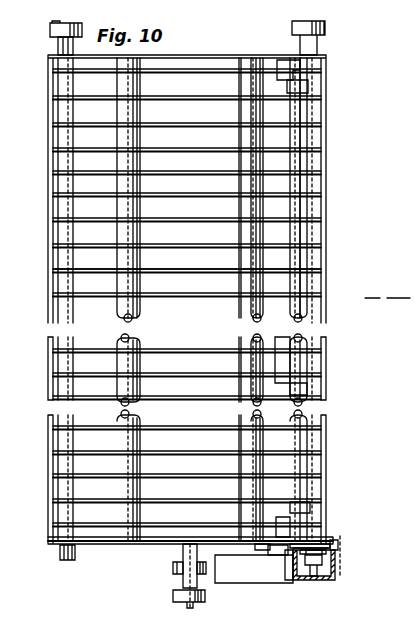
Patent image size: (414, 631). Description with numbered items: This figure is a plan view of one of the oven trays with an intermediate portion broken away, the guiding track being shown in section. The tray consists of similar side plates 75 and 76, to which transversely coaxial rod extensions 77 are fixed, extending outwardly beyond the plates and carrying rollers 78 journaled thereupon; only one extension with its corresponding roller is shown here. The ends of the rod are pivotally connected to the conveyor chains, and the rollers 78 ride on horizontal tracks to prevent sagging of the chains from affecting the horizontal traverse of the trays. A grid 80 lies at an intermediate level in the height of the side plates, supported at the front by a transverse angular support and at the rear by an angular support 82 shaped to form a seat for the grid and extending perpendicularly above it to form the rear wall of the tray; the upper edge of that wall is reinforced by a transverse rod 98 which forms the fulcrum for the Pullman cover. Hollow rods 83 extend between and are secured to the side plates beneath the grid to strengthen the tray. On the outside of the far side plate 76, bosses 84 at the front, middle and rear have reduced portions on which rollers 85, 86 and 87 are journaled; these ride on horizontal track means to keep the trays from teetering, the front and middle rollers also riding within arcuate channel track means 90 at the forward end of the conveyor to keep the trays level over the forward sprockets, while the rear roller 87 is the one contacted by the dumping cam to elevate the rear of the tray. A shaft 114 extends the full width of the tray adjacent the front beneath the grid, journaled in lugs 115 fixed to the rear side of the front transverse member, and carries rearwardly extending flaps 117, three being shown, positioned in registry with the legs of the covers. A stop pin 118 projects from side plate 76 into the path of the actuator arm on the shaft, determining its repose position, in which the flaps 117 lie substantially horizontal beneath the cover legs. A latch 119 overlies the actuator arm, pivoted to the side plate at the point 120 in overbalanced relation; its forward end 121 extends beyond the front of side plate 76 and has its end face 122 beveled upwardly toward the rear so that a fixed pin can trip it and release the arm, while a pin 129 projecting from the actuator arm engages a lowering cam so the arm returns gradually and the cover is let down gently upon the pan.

The side plate 75 is at (236, 58).
The side plate 76 is at (112, 545).
The rod extension 77 is at (183, 548).
The roller 78 is at (180, 598).
The grid 80 is at (199, 368).
The angular support 82 is at (73, 381).
The hollow rod 83 is at (140, 317).
The boss 84 is at (58, 46).
The roller 85 is at (50, 28).
The roller 86 is at (197, 572).
The roller 87 is at (328, 30).
The arcuate channel track means 90 is at (333, 582).
The transverse rod 98 is at (48, 480).
The shaft 114 is at (293, 283).
The lug 115 is at (300, 90).
The flap 117 is at (287, 65).
The stop pin 118 is at (272, 556).
The latch 119 is at (286, 556).
The pivot point 120 is at (328, 540).
The forward end of latch 121 is at (330, 566).
The end face 122 is at (340, 543).
The pin 129 is at (291, 580).